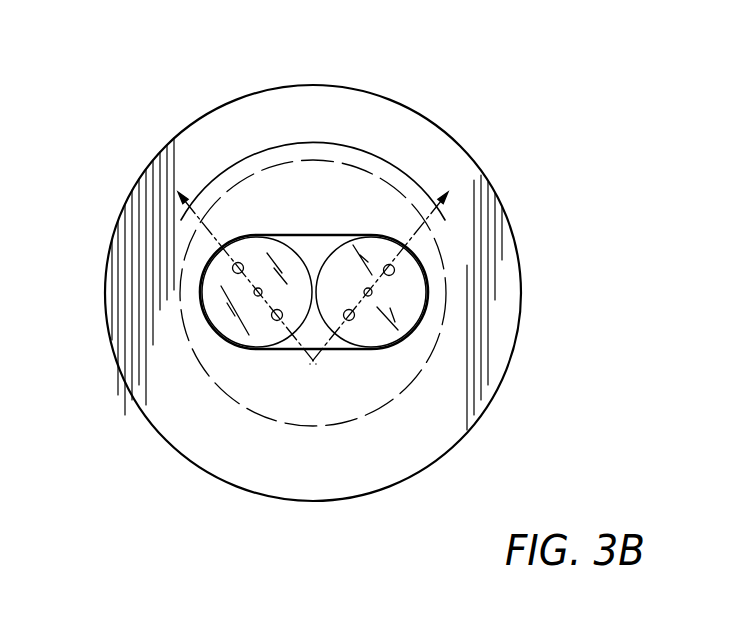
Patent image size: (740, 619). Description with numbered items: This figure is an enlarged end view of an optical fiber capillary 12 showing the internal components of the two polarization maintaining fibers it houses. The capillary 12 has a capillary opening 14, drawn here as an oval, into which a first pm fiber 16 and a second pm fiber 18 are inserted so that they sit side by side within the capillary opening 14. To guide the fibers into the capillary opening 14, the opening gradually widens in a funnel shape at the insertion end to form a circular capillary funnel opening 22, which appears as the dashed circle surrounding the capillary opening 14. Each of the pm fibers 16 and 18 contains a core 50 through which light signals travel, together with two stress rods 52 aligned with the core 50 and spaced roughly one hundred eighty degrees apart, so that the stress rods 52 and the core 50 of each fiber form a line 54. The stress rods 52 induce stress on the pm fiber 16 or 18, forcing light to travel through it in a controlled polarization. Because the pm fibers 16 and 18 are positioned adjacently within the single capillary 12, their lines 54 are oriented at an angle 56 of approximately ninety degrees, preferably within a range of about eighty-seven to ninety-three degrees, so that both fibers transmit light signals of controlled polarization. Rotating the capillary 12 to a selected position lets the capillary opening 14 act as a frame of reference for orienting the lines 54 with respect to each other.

The optical fiber capillary 12 is at (463, 148).
The capillary opening 14 is at (317, 235).
The first polarization maintaining optical fiber 16 is at (236, 338).
The second polarization maintaining optical fiber 18 is at (405, 334).
The circular capillary funnel opening 22 is at (283, 423).
The core 50 is at (254, 295).
The stress rods 52 is at (232, 270).
The line 54 is at (181, 220).
The angle 56 is at (314, 142).